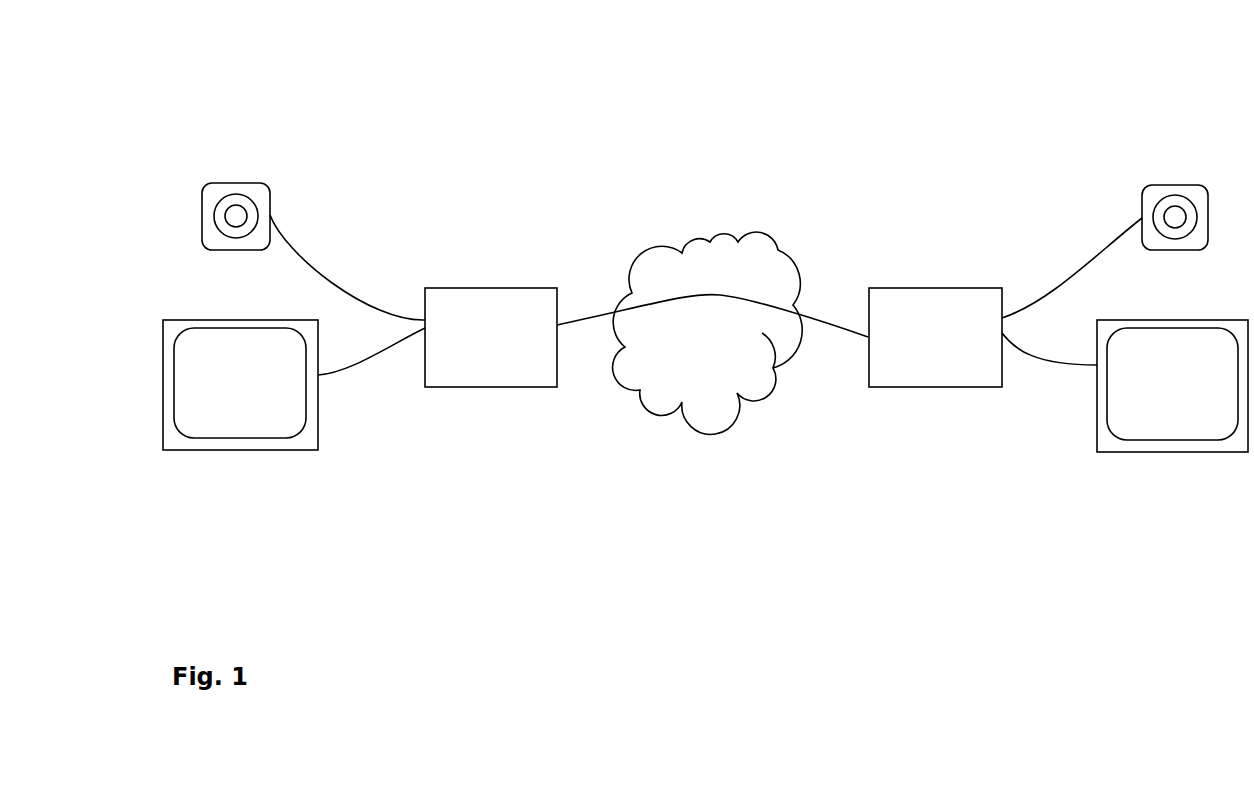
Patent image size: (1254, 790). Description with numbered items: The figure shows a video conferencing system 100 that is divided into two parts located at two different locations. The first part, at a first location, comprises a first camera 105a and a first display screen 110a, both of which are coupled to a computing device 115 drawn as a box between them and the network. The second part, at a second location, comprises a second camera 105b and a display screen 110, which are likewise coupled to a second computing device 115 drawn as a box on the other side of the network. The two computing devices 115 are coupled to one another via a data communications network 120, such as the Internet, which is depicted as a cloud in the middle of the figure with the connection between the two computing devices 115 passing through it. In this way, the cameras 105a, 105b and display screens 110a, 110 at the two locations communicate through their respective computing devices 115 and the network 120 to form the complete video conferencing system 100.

The video conferencing system 100 is at (390, 85).
The first camera 105a is at (237, 183).
The second camera 105b is at (1177, 185).
The first display screen 110a is at (233, 320).
The display screen 110 is at (1187, 320).
The computing device 115 is at (492, 288).
The data communications network 120 is at (735, 230).